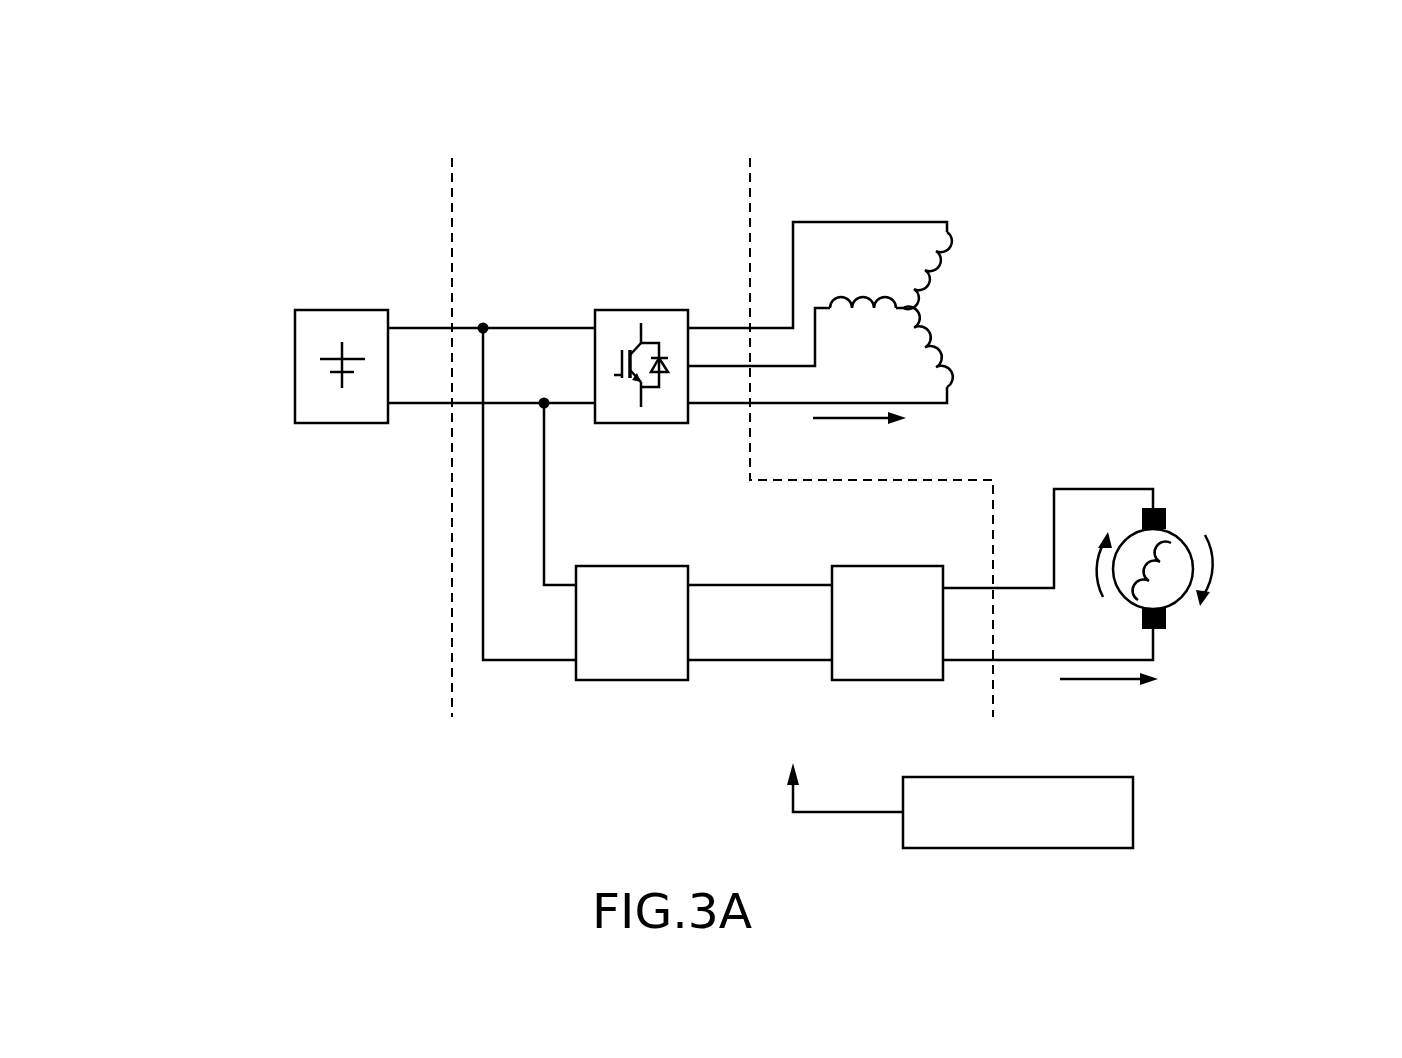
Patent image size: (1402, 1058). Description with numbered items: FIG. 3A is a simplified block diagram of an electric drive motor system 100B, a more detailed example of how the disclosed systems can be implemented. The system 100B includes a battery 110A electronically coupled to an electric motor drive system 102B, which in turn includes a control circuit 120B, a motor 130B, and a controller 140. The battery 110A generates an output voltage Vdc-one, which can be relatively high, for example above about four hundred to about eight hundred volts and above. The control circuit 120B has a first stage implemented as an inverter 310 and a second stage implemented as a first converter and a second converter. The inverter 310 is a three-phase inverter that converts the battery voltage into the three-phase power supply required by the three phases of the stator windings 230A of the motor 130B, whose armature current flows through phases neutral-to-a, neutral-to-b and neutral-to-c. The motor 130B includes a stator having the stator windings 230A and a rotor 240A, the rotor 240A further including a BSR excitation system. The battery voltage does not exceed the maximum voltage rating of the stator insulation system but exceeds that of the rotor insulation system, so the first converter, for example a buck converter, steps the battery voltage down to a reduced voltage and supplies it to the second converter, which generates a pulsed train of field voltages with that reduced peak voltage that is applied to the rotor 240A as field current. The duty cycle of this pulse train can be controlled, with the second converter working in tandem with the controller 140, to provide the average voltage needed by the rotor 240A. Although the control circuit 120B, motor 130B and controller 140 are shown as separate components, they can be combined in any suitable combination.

The system 100B is at (138, 198).
The electric motor drive system 102B is at (1212, 95).
The battery 110A is at (370, 211).
The control circuit 120B is at (625, 191).
The motor 130B is at (895, 191).
The stator windings 230A is at (1035, 310).
The rotor 240A is at (1252, 568).
The inverter 310 is at (612, 403).
The controller 140 is at (1102, 825).